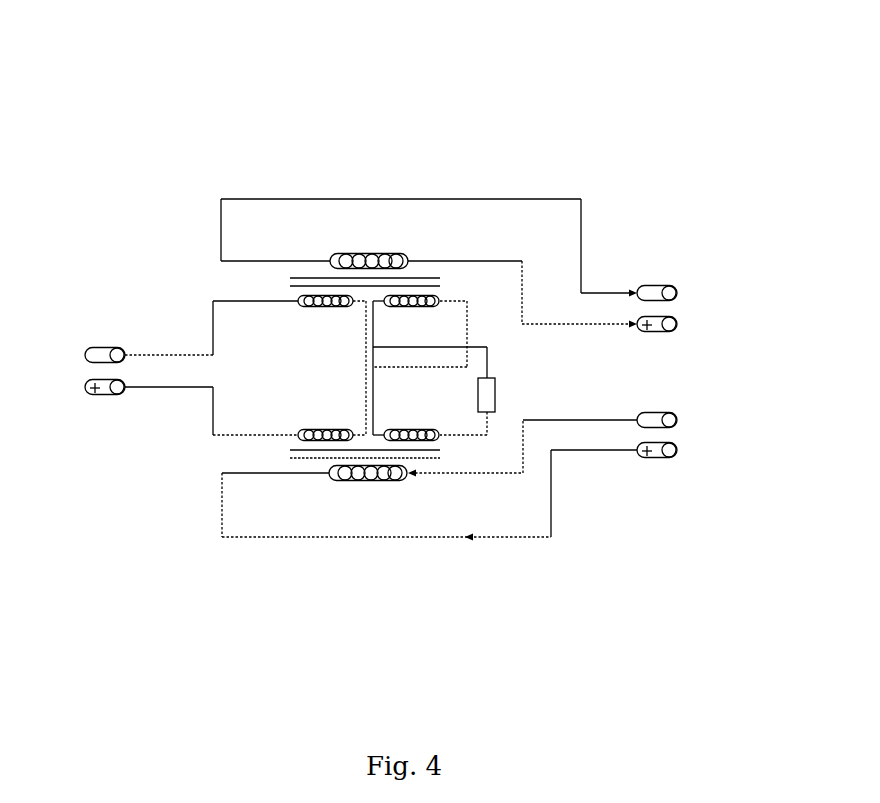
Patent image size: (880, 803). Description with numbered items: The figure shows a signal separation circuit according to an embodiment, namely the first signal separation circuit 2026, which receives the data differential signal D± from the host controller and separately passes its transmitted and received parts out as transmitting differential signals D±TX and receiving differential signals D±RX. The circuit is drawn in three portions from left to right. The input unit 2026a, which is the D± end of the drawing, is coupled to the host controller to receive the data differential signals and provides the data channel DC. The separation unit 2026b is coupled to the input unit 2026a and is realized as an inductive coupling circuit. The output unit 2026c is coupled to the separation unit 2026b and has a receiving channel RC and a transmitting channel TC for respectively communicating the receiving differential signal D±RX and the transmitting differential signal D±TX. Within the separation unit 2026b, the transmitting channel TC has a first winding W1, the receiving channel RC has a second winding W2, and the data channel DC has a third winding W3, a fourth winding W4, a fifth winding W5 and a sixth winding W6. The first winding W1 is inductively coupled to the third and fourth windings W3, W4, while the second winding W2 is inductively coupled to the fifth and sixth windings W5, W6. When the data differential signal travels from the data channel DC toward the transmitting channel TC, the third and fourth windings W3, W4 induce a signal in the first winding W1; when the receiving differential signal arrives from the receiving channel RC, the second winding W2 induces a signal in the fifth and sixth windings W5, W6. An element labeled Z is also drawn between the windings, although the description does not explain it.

The first signal separation circuit 2026 is at (105, 43).
The input unit 2026a is at (155, 404).
The separation unit 2026b is at (429, 403).
The output unit 2026c is at (656, 405).
The first winding W1 is at (371, 248).
The second winding W2 is at (368, 488).
The third winding W3 is at (328, 316).
The fourth winding W4 is at (413, 316).
The fifth winding W5 is at (324, 422).
The sixth winding W6 is at (413, 422).
The impedance Z is at (486, 395).